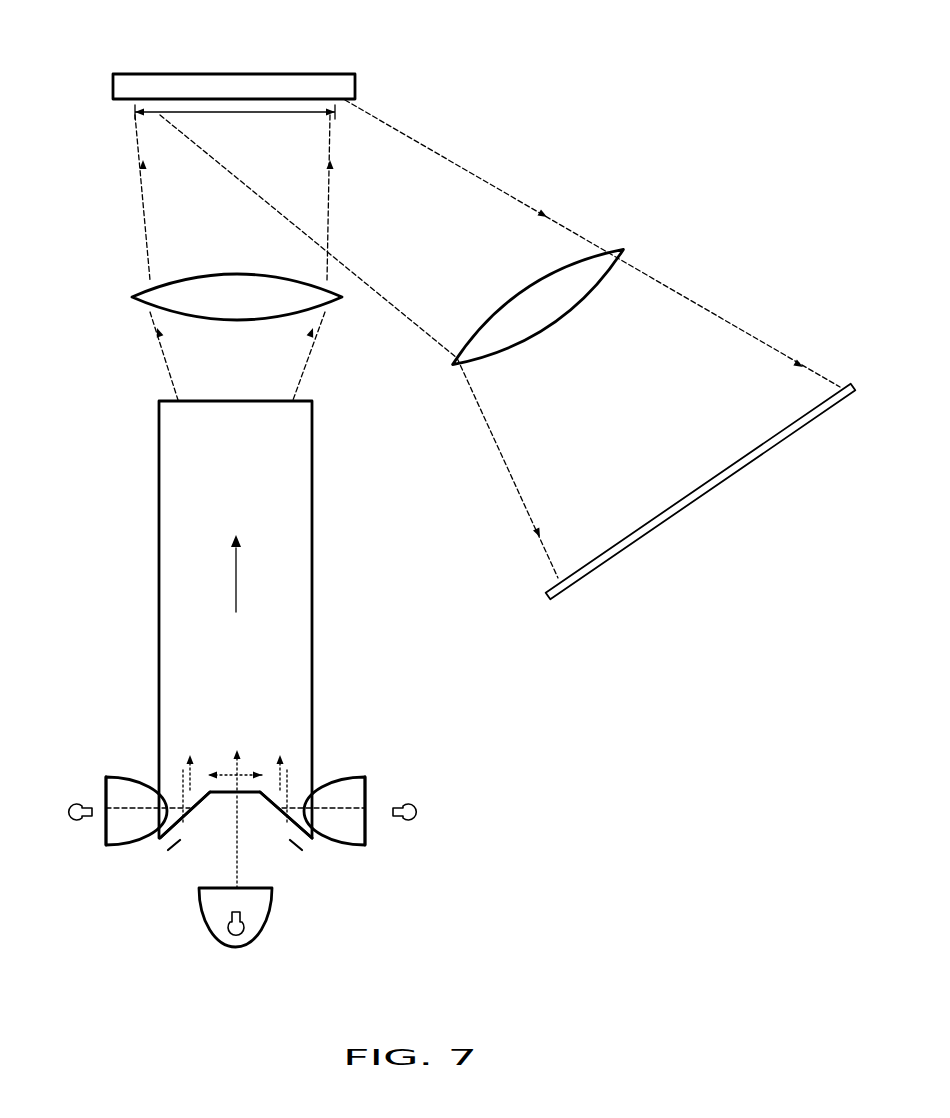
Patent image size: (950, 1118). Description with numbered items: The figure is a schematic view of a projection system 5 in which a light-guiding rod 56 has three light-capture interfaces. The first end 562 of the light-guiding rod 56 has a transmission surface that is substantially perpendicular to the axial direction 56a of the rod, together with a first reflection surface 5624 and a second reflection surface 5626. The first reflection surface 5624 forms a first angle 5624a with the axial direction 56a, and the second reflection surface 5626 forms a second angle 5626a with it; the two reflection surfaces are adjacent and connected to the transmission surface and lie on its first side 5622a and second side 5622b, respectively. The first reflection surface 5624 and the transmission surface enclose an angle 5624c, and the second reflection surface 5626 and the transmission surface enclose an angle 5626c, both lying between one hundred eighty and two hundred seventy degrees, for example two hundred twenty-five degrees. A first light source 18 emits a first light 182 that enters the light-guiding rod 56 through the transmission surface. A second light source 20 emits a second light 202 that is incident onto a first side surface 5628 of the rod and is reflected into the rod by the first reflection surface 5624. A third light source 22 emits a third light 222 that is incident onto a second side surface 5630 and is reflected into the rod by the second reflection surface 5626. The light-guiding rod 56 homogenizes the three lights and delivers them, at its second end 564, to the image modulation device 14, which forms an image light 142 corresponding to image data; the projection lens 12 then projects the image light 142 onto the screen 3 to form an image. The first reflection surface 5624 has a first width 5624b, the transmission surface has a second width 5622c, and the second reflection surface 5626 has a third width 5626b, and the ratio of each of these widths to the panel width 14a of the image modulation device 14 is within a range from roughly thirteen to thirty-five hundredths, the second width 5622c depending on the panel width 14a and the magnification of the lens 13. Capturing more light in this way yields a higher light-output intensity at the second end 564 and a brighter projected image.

The projection system 5 is at (640, 70).
The image modulation device 14 is at (242, 84).
The panel width 14a is at (235, 126).
The image light 142 is at (460, 165).
The lens 13 is at (331, 301).
The projection lens 12 is at (621, 250).
The screen 3 is at (695, 498).
The light-guiding rod 56 is at (302, 521).
The second end 564 is at (232, 435).
The axial direction 56a is at (233, 588).
The first end 562 is at (236, 700).
The second reflection surface 5626 is at (190, 838).
The first reflection surface 5624 is at (286, 838).
The second angle 5626a is at (166, 786).
The first angle 5624a is at (306, 786).
The third width 5626b is at (182, 832).
The first width 5624b is at (290, 832).
The angle 5626c is at (183, 765).
The angle 5624c is at (292, 765).
The first side 5622a is at (212, 800).
The second side 5622b is at (262, 800).
The second width 5622c is at (242, 757).
The third light source 22 is at (70, 785).
The third light 222 is at (122, 797).
The second side surface 5630 is at (157, 827).
The second light source 20 is at (400, 788).
The second light 202 is at (348, 797).
The first side surface 5628 is at (316, 826).
The first light source 18 is at (256, 931).
The first light 182 is at (252, 875).